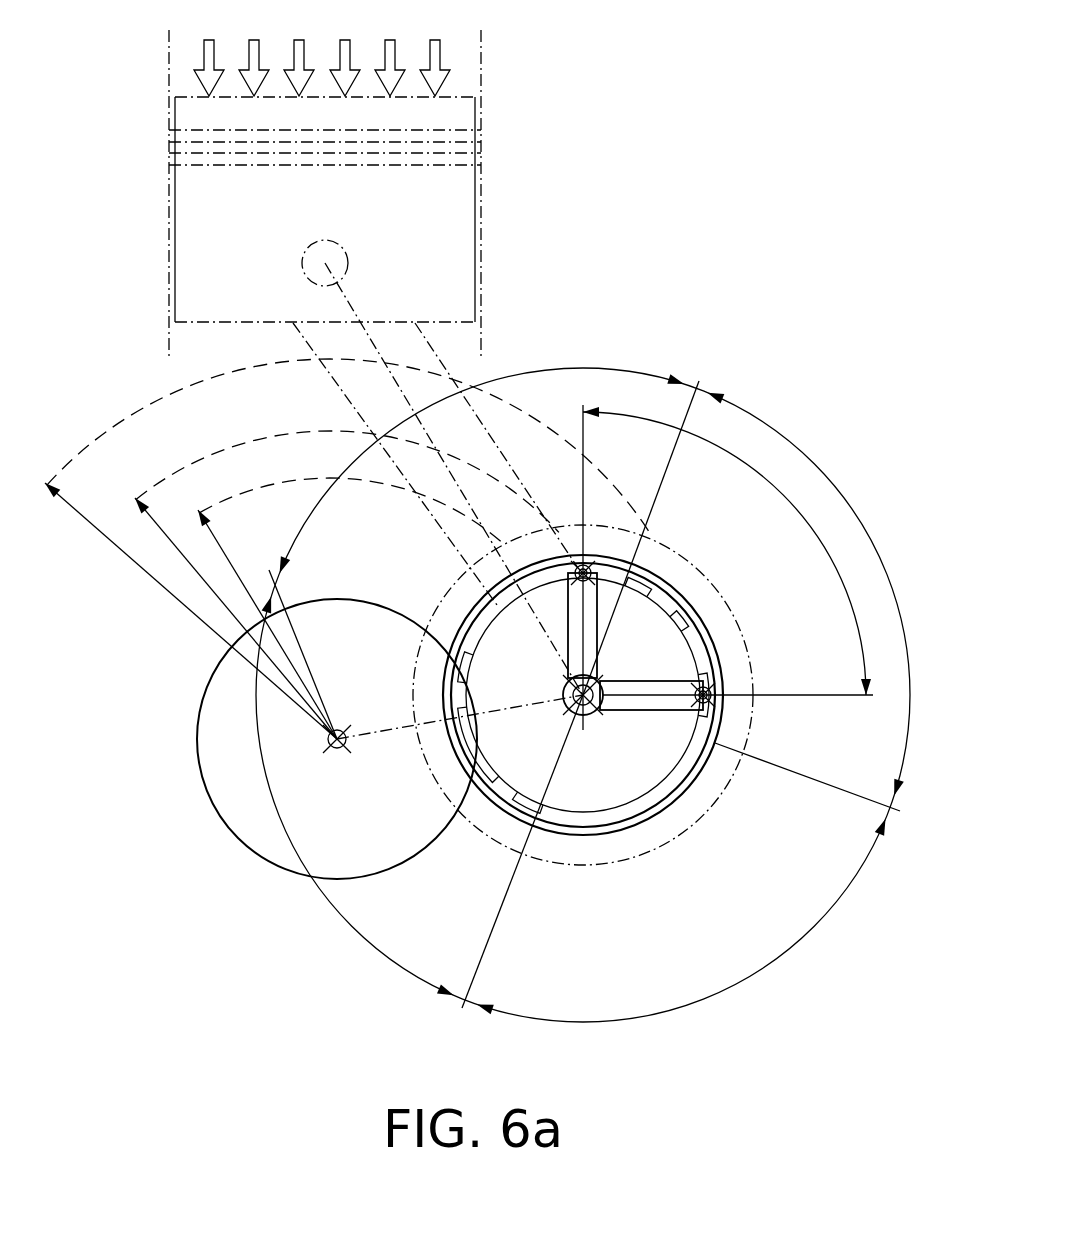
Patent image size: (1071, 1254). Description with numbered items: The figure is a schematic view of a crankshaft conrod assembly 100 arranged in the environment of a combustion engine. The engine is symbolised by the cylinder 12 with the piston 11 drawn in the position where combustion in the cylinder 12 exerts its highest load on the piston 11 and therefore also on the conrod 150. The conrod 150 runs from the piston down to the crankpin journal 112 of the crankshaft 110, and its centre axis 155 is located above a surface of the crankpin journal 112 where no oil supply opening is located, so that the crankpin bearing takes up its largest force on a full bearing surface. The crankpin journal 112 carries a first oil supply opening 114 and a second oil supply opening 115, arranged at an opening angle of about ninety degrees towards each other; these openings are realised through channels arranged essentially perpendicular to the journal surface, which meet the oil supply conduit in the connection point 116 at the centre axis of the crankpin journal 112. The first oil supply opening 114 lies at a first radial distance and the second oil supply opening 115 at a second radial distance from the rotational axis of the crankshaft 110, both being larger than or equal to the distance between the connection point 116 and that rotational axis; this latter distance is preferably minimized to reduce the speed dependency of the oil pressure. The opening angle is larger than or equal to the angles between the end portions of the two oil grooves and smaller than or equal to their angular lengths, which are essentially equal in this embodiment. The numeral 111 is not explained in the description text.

The crankshaft conrod assembly 100 is at (745, 283).
The piston 11 is at (440, 208).
The cylinder 12 is at (460, 80).
The centre axis of the conrod 155 is at (357, 313).
The conrod 150 is at (503, 458).
The crankshaft 110 is at (238, 757).
The first gear axis 111 is at (210, 681).
The crankpin journal 112 is at (680, 770).
The first oil supply opening 114 is at (598, 556).
The second oil supply opening 115 is at (730, 689).
The connection point 116 is at (605, 722).